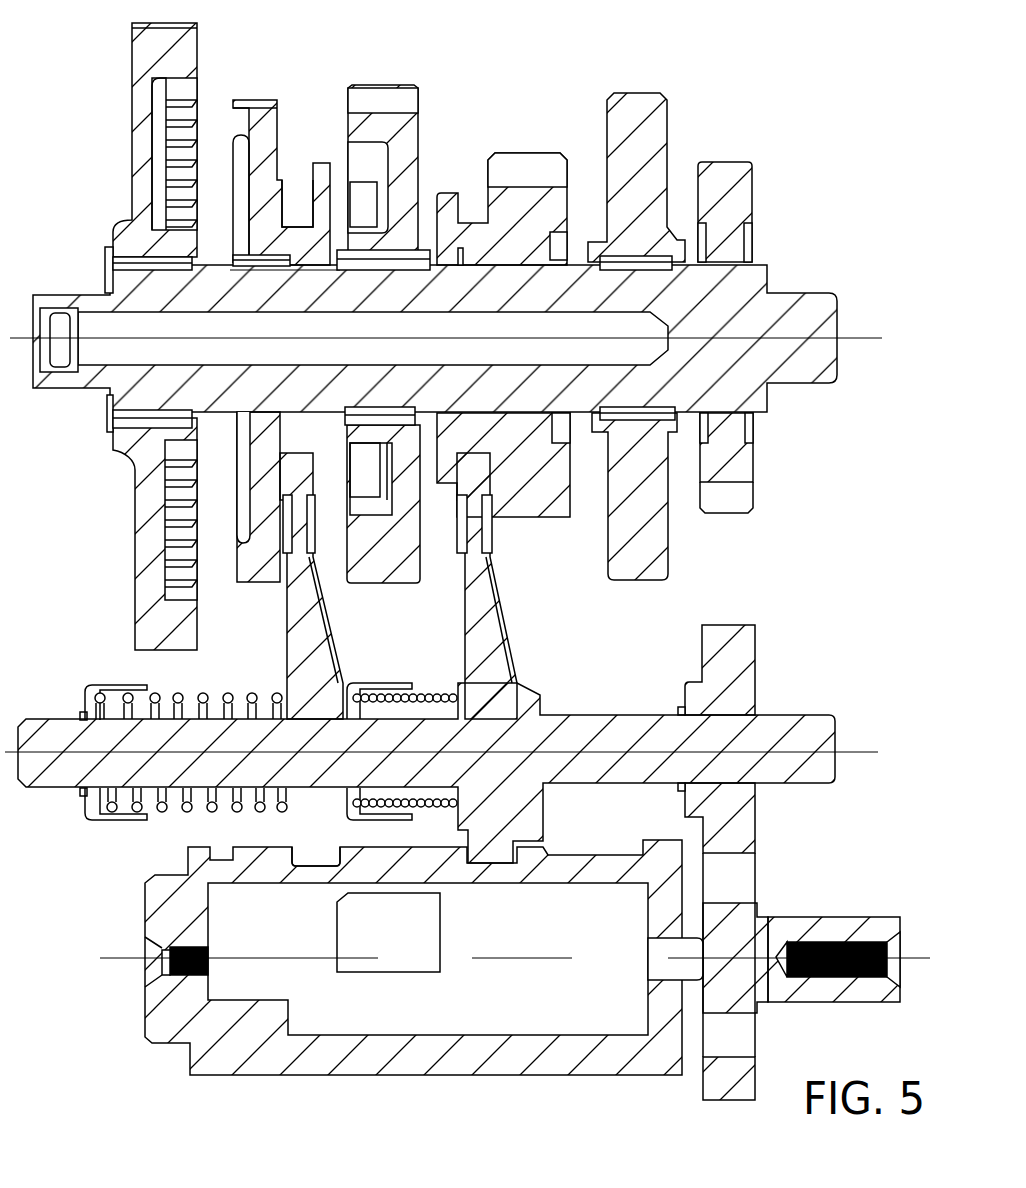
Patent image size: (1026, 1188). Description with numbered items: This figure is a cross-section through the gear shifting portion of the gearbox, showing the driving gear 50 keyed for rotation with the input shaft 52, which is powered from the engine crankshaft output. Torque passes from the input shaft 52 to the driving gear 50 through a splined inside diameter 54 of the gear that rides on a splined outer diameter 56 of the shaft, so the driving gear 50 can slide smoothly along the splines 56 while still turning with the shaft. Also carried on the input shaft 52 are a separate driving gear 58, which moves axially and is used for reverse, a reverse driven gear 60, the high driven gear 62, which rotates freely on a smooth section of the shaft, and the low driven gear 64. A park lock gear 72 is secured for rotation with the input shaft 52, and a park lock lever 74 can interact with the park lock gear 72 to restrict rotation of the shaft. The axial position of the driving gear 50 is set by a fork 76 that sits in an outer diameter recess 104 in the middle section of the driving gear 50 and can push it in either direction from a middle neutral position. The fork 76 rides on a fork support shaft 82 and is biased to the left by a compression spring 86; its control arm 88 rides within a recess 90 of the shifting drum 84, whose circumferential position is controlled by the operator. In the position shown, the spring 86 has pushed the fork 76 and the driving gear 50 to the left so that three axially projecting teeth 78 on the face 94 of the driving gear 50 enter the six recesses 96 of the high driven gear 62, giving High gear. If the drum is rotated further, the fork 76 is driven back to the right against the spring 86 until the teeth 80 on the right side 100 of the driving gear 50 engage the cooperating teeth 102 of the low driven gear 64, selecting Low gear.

The driving gear 50 is at (283, 128).
The input shaft 52 is at (787, 375).
The splined inside diameter 54 is at (280, 412).
The splined outer diameter 56 is at (253, 250).
The separate driving gear 58 is at (553, 505).
The reverse driven gear 60 is at (622, 553).
The high driven gear 62 is at (371, 514).
The low driven gear 64 is at (143, 627).
The park lock gear 72 is at (747, 470).
The park lock lever 74 is at (742, 648).
The fork 76 is at (292, 633).
The teeth 78 is at (363, 510).
The teeth 80 is at (267, 99).
The fork support shaft 82 is at (632, 777).
The shifting drum 84 is at (515, 952).
The compression spring 86 is at (163, 810).
The control arm 88 is at (330, 847).
The recess 90 is at (293, 865).
The face 94 is at (361, 160).
The recesses 96 is at (357, 157).
The right side 100 is at (233, 130).
The teeth 102 is at (190, 515).
The outer diameter recess 104 is at (303, 223).